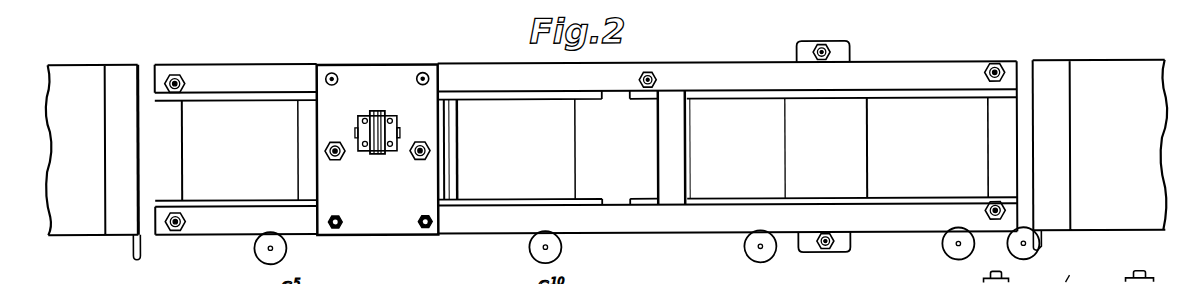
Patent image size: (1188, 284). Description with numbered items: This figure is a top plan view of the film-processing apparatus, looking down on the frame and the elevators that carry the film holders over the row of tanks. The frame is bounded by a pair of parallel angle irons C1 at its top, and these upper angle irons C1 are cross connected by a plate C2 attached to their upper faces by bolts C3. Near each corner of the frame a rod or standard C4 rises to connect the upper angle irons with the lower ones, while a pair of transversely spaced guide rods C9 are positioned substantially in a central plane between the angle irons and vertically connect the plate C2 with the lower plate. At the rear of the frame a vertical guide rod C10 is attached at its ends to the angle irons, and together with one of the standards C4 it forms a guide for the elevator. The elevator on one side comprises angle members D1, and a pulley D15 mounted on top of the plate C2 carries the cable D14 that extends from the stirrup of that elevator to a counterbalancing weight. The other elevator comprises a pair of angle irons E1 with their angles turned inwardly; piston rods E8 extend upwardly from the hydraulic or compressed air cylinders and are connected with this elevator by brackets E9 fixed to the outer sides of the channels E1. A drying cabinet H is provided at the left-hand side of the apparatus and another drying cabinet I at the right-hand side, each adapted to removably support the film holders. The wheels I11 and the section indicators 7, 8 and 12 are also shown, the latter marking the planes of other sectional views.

The drying cabinet H is at (93, 162).
The drying cabinet I is at (1100, 155).
The angle irons C1 is at (507, 217).
The plate C2 is at (378, 150).
The bolts C3 is at (332, 78).
The rods or standards C4 is at (1004, 188).
The guide rods C9 is at (418, 158).
The guide rod C10 is at (652, 70).
The angle members D1 is at (481, 199).
The cable D14 is at (378, 132).
The pulley D15 is at (387, 113).
The angle irons E1 is at (752, 91).
The piston rods E8 is at (862, 55).
The brackets E9 is at (797, 50).
The wheels I11 is at (952, 245).
The section line 7 is at (310, 153).
The section line 8 is at (995, 38).
The section line 12 is at (380, 106).